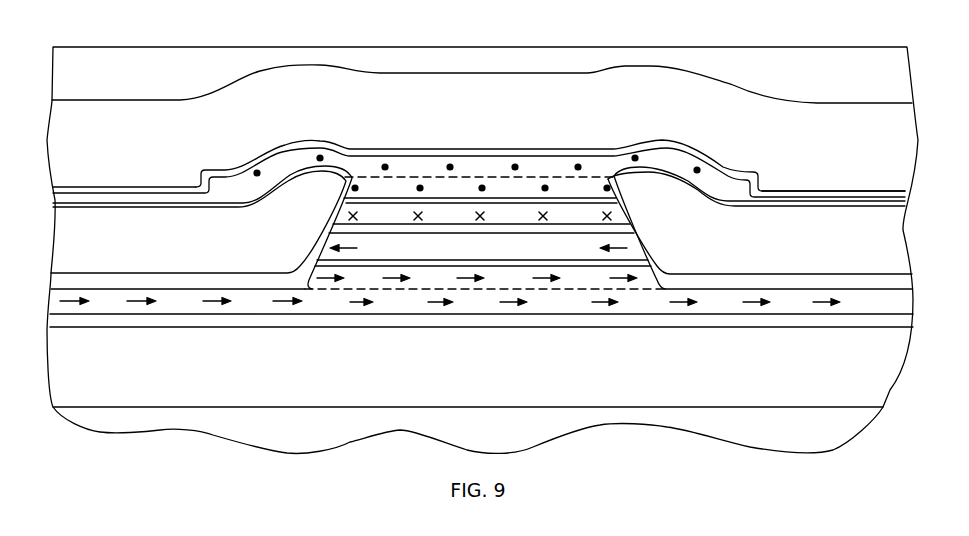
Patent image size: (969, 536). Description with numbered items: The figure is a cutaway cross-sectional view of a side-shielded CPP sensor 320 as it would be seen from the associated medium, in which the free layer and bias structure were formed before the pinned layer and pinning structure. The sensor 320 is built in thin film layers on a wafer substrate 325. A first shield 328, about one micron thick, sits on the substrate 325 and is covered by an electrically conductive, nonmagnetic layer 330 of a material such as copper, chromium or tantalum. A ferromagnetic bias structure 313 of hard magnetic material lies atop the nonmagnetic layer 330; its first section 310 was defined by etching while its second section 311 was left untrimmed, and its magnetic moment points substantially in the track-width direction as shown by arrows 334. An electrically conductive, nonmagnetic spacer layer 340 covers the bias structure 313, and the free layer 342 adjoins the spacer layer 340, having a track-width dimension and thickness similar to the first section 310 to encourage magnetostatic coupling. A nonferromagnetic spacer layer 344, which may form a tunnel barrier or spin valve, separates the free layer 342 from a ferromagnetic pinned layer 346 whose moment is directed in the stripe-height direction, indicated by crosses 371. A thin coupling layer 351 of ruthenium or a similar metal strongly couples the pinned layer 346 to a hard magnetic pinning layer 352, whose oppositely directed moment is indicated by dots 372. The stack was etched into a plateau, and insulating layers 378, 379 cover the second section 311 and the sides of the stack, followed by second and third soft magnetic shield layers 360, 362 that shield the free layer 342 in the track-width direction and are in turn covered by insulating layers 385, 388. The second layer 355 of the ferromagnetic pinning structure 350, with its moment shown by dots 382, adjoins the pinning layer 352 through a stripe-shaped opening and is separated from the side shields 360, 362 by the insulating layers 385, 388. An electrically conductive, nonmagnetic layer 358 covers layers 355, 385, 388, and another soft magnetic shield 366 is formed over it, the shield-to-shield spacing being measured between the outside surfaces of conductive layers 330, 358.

The side-shielded CPP sensor 320 is at (212, 73).
The soft magnetic shield 366 is at (77, 136).
The electrically insulating layer 385 is at (163, 187).
The electrically conductive nonmagnetic layer 358 is at (427, 149).
The electrically insulating layer 388 is at (793, 191).
The second layer of the ferromagnetic pinning structure 355 is at (371, 155).
The dots 372 is at (354, 185).
The insulating layer 378 is at (163, 273).
The dots 382 is at (634, 154).
The insulating layer 379 is at (757, 274).
The second section of the bias structure 311 is at (802, 289).
The second soft magnetic shield layer 360 is at (76, 259).
The third soft magnetic shield layer 362 is at (849, 254).
The hard magnetic pinning layer 352 is at (503, 174).
The ferromagnetic pinning structure 350 is at (547, 149).
The ferromagnetic pinned layer 346 is at (463, 201).
The electrically conductive nonmagnetic coupling layer 351 is at (567, 200).
The crosses 371 is at (602, 224).
The nonferromagnetic spacer layer 344 is at (378, 233).
The free layer 342 is at (430, 260).
The electrically conductive nonmagnetic spacer layer 340 is at (500, 266).
The first section of the bias structure 310 is at (315, 292).
The arrows 334 is at (675, 303).
The ferromagnetic bias structure 313 is at (618, 315).
The electrically conductive nonmagnetic layer 330 is at (165, 328).
The first shield 328 is at (768, 379).
The wafer substrate 325 is at (478, 434).